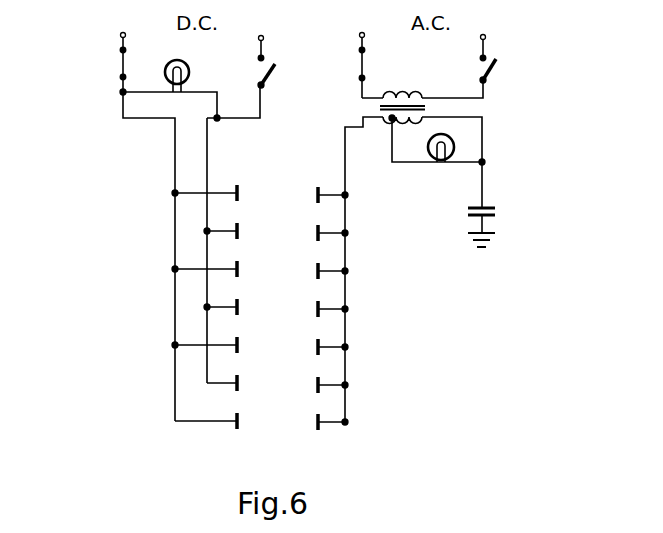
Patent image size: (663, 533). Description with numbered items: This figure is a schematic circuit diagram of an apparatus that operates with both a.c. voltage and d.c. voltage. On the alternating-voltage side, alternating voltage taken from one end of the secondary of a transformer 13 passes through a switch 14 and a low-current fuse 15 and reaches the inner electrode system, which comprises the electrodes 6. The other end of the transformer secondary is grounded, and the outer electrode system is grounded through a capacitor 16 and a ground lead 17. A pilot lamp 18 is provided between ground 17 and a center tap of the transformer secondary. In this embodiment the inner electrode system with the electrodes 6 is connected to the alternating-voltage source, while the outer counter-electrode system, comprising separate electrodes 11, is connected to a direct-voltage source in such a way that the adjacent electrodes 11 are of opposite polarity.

The electrodes 6 is at (320, 264).
The separate electrodes 11 is at (236, 263).
The transformer 13 is at (426, 107).
The switch 14 is at (272, 78).
The low-current fuse 15 is at (121, 68).
The capacitor 16 is at (494, 207).
The ground lead 17 is at (480, 247).
The pilot lamp 18 is at (189, 68).